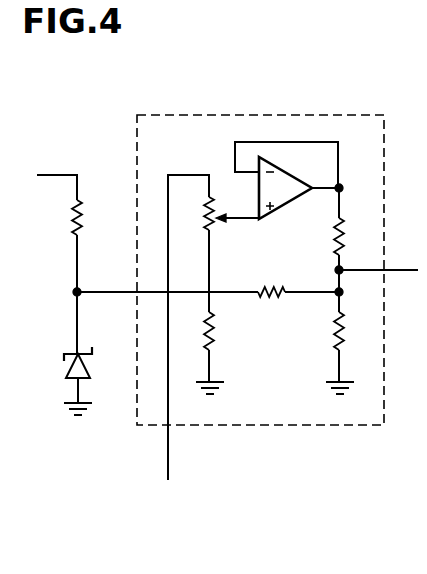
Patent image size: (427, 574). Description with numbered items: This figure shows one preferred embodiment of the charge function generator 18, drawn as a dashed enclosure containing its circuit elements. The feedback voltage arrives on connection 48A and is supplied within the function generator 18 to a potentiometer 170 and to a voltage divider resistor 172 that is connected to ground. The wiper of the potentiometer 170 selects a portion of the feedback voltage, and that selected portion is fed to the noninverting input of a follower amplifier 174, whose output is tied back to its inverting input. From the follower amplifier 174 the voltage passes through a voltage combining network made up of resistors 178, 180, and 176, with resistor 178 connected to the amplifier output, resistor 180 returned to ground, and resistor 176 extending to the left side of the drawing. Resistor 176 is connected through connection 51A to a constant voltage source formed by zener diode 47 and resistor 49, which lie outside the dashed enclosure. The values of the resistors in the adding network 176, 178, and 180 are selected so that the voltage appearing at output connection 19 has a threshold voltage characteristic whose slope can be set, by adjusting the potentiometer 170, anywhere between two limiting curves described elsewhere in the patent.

The charge function generator 18 is at (250, 113).
The resistor 49 is at (70, 226).
The connection 51A is at (119, 272).
The zener diode 47 is at (88, 361).
The connection 48A is at (170, 472).
The potentiometer 170 is at (213, 232).
The voltage divider resistor 172 is at (215, 340).
The follower amplifier 174 is at (320, 155).
The resistor 176 is at (278, 285).
The resistor 178 is at (334, 238).
The output connection 19 is at (398, 268).
The resistor 180 is at (333, 337).